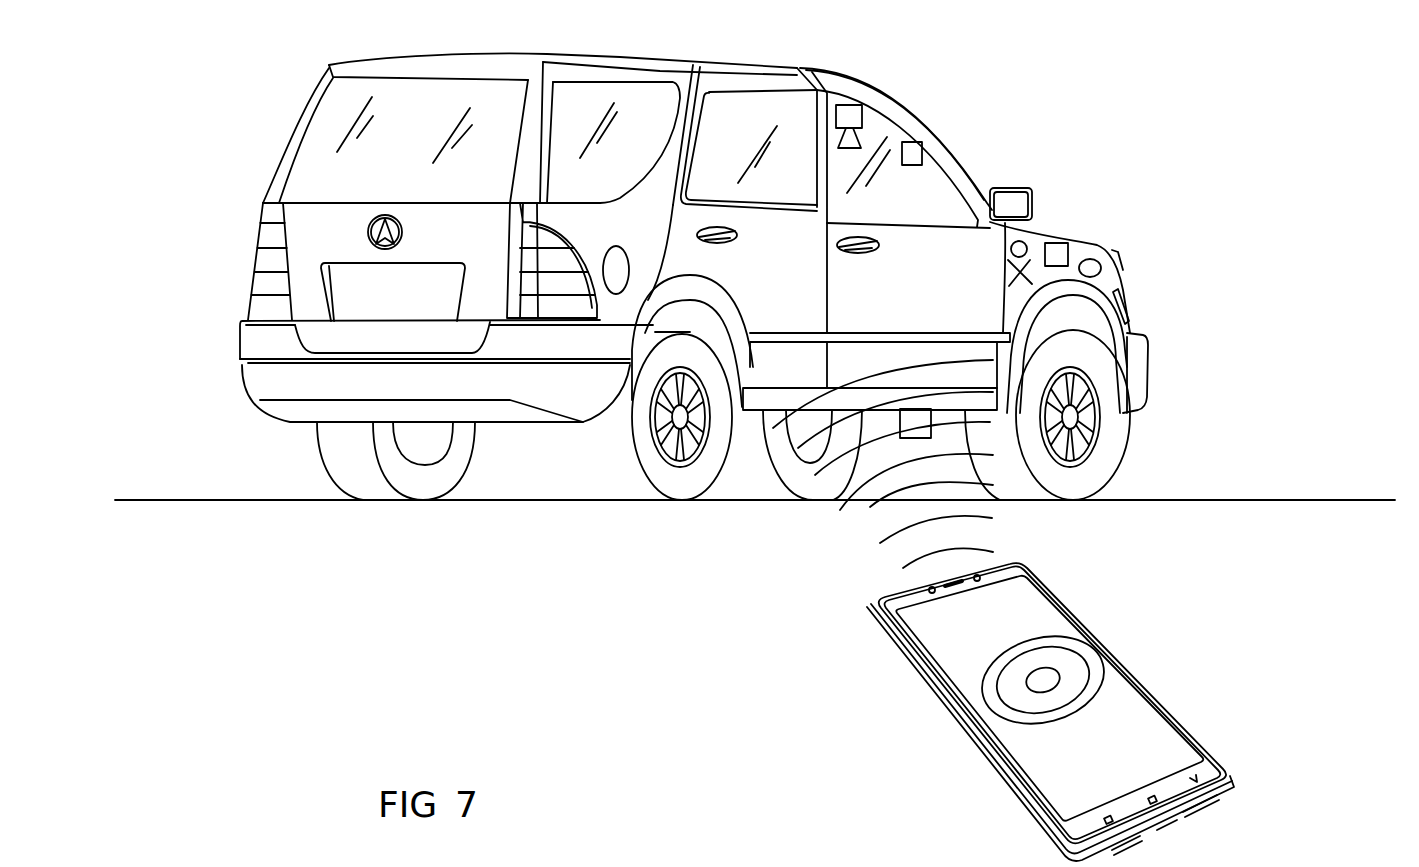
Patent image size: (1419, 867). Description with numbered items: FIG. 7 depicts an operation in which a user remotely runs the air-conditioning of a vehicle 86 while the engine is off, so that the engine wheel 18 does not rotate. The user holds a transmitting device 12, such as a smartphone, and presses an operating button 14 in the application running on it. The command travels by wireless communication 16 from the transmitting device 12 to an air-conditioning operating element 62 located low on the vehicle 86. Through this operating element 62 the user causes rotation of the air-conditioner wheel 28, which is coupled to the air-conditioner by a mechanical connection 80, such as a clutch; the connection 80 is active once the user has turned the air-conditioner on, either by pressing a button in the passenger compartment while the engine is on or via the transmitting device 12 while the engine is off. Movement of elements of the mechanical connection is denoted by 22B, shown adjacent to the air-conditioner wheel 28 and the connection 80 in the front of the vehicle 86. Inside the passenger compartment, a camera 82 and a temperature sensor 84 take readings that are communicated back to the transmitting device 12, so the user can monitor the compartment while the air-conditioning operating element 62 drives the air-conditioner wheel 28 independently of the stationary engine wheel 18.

The transmitting device 12 is at (1087, 620).
The operating button 14 is at (1043, 680).
The wireless communication 16 is at (883, 464).
The engine wheel 18 is at (1023, 242).
The movement of elements of mechanical connection 22B is at (1093, 245).
The air-conditioner wheel 28 is at (1093, 277).
The air-conditioning operating element 62 is at (916, 420).
The mechanical connection 80 is at (1060, 253).
The camera 82 is at (852, 118).
The temperature sensor 84 is at (915, 157).
The vehicle 86 is at (937, 147).